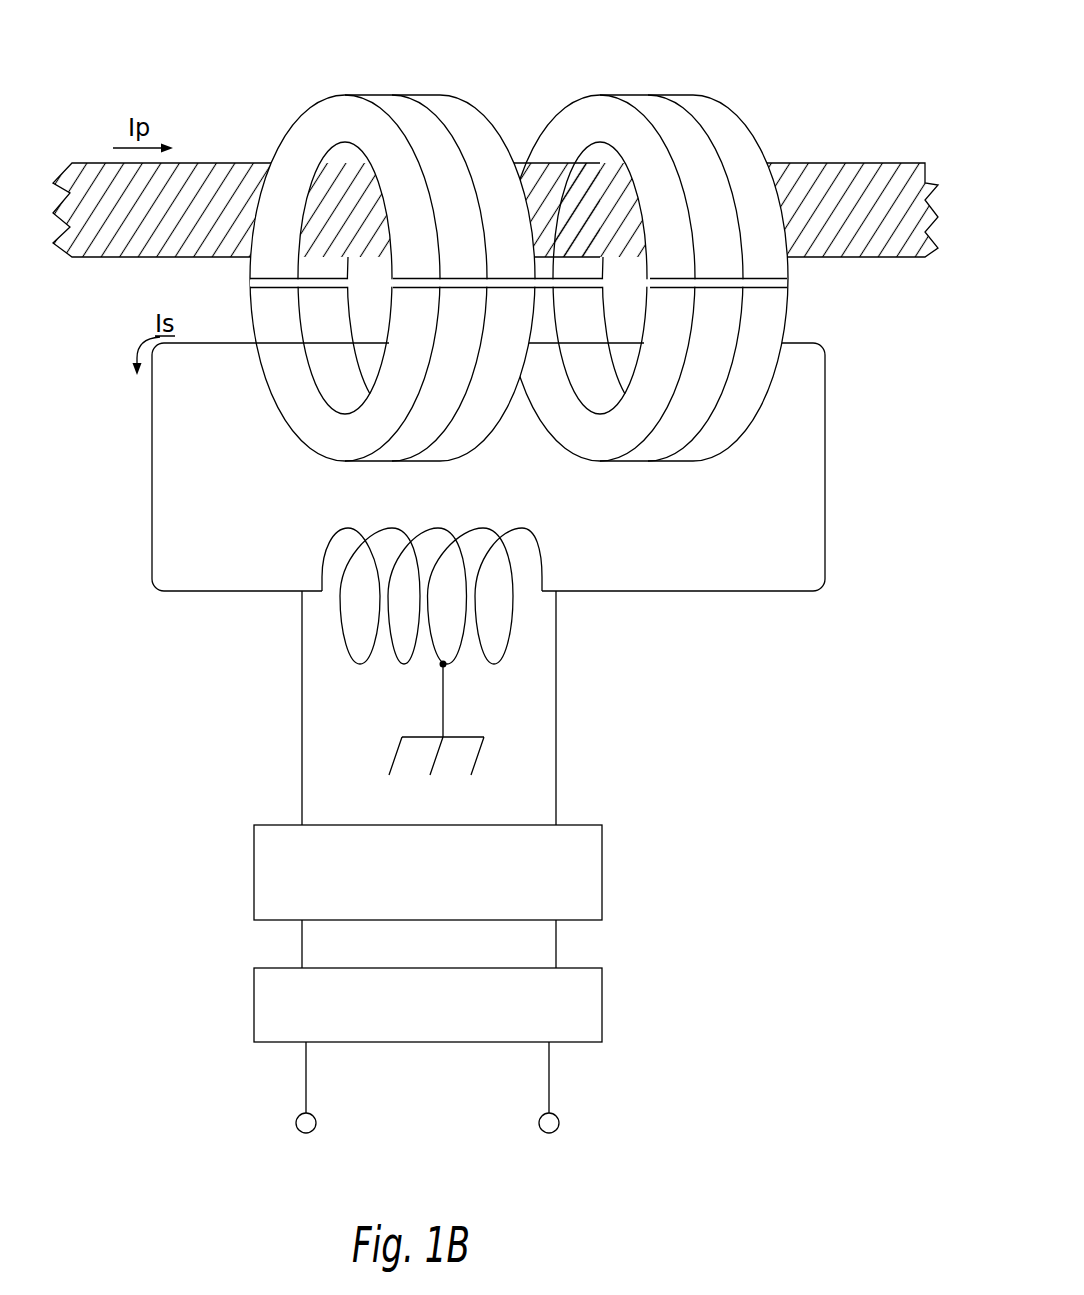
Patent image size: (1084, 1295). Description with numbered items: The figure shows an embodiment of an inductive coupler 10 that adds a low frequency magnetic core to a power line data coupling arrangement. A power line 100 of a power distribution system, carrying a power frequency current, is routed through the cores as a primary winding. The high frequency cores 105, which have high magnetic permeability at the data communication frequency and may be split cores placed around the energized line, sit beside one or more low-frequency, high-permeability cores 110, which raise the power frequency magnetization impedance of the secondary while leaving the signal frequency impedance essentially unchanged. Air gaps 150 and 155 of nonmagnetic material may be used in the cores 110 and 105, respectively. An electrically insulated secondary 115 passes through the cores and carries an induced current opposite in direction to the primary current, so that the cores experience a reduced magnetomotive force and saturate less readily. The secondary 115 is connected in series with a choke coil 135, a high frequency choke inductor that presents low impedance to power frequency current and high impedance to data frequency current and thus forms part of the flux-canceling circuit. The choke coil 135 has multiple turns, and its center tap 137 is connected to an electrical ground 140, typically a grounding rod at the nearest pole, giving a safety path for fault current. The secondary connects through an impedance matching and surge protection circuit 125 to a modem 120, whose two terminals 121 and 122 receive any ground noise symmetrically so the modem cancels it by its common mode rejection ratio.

The inductive coupler 10 is at (539, 243).
The power line 100 is at (851, 160).
The cores 105 is at (502, 112).
The low-frequency cores 110 is at (752, 118).
The secondary 115 is at (368, 348).
The modem 120 is at (618, 998).
The modem terminal 121 is at (288, 944).
The modem terminal 122 is at (568, 942).
The impedance matching and surge protection circuit 125 is at (618, 870).
The choke coil 135 is at (556, 546).
The center tap 137 is at (462, 671).
The electrical ground 140 is at (497, 762).
The air gap 150 is at (799, 287).
The air gap 155 is at (240, 285).